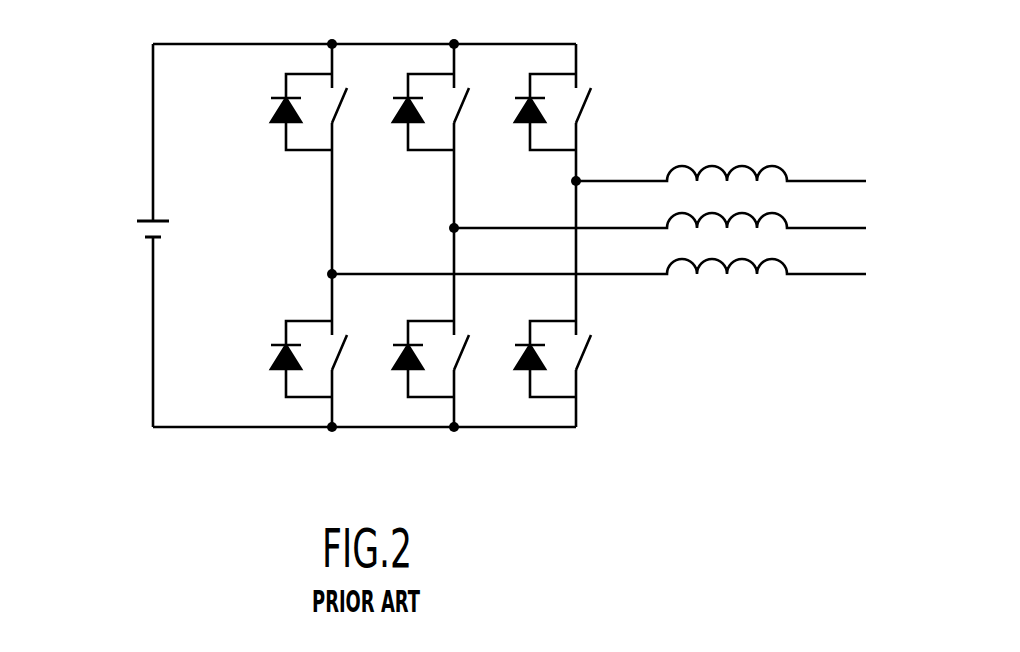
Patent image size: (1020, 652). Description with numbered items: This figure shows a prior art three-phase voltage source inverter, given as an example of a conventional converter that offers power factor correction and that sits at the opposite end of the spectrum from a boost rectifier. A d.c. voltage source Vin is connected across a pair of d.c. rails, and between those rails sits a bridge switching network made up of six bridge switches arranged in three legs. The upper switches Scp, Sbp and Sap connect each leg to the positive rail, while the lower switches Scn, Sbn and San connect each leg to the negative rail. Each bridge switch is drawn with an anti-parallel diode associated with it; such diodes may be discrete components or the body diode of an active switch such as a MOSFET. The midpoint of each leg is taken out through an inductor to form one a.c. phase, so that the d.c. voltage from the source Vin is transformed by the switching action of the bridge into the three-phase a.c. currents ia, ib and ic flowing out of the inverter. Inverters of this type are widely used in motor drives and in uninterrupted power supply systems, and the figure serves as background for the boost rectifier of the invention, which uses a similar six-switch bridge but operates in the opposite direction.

The d.c. voltage source Vin is at (127, 235).
The bridge switch Scp is at (323, 113).
The bridge switch Sbp is at (445, 113).
The bridge switch Sap is at (567, 113).
The bridge switch Scn is at (323, 359).
The bridge switch Sbn is at (445, 359).
The bridge switch San is at (567, 359).
The three-phase a.c. current ia is at (733, 157).
The three-phase a.c. current ib is at (733, 204).
The three-phase a.c. current ic is at (733, 251).